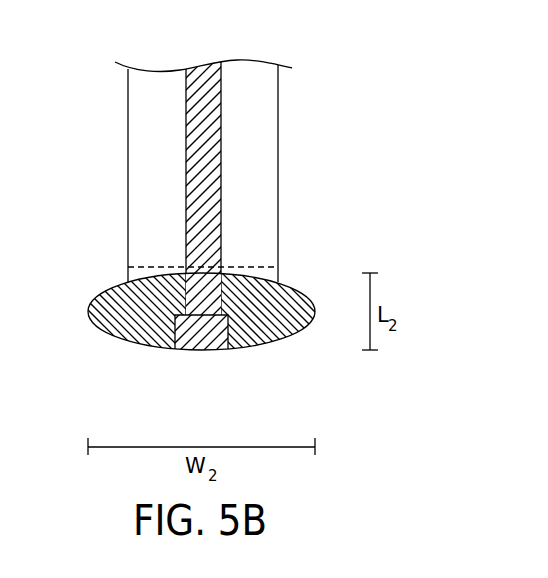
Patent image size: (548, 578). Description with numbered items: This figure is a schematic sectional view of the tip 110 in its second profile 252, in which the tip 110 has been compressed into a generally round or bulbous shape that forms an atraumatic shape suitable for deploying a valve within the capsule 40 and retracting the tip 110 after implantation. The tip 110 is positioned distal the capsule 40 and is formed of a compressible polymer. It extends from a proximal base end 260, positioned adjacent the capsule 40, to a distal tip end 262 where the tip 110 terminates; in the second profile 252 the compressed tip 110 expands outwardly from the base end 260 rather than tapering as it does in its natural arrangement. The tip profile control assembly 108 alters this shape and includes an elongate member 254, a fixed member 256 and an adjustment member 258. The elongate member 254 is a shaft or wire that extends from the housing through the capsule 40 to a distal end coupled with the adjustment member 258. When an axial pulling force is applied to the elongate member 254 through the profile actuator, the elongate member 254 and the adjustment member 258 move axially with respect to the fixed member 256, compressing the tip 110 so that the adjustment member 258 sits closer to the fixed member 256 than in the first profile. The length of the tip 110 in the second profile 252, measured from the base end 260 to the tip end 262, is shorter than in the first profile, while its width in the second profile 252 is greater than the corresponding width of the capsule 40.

The tip profile control assembly 108 is at (244, 165).
The capsule 40 is at (128, 132).
The elongate member 254 is at (222, 125).
The fixed member 256 is at (245, 265).
The tip 110 is at (268, 237).
The second profile 252 is at (263, 349).
The base end 260 is at (152, 276).
The tip end 262 is at (188, 350).
The adjustment member 258 is at (218, 338).